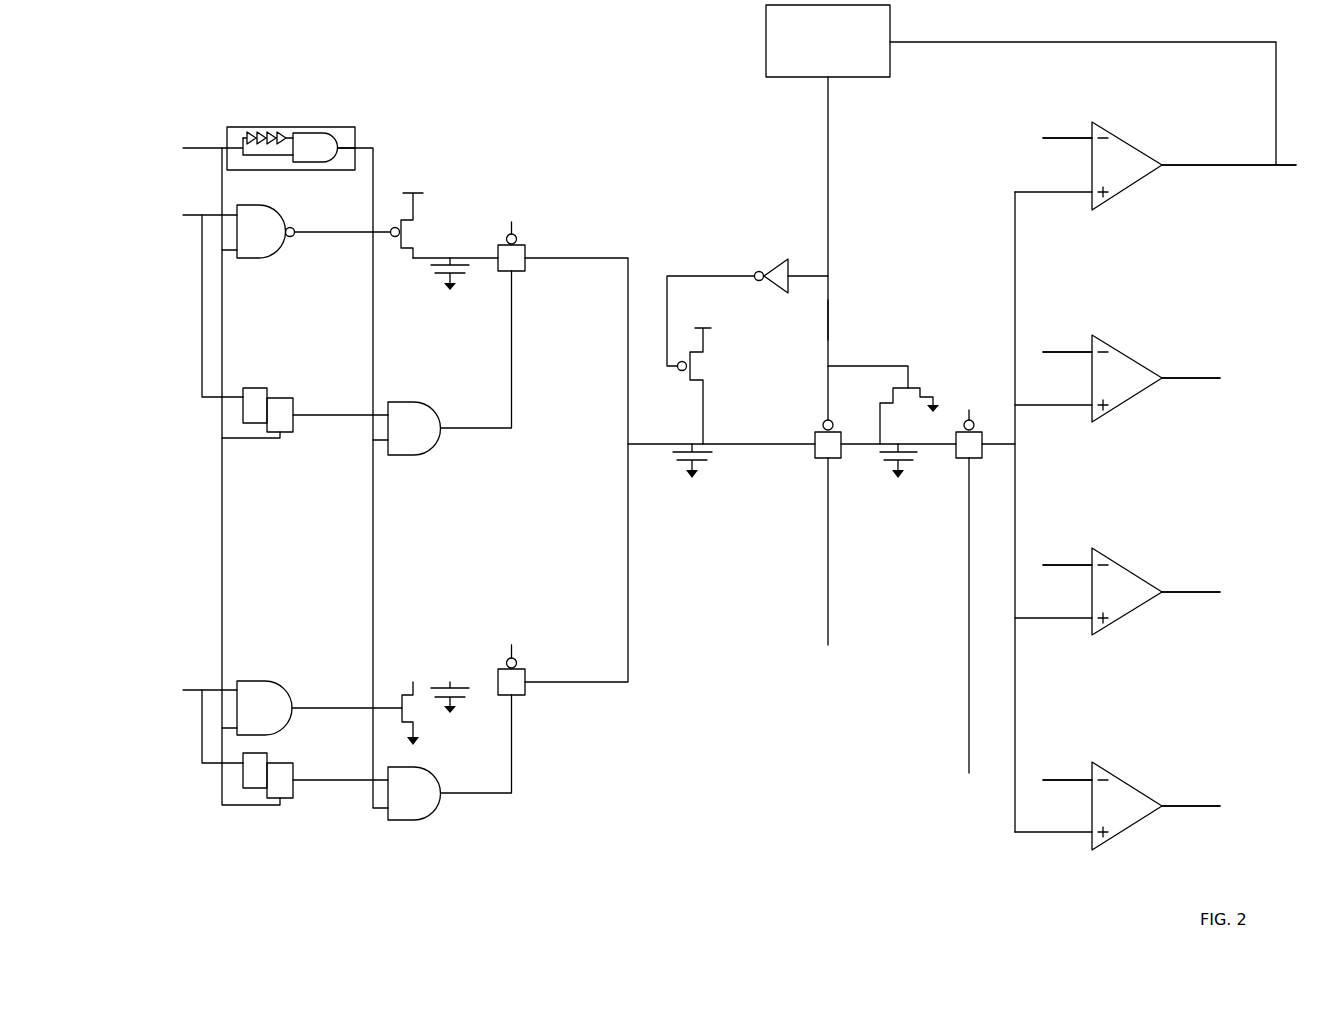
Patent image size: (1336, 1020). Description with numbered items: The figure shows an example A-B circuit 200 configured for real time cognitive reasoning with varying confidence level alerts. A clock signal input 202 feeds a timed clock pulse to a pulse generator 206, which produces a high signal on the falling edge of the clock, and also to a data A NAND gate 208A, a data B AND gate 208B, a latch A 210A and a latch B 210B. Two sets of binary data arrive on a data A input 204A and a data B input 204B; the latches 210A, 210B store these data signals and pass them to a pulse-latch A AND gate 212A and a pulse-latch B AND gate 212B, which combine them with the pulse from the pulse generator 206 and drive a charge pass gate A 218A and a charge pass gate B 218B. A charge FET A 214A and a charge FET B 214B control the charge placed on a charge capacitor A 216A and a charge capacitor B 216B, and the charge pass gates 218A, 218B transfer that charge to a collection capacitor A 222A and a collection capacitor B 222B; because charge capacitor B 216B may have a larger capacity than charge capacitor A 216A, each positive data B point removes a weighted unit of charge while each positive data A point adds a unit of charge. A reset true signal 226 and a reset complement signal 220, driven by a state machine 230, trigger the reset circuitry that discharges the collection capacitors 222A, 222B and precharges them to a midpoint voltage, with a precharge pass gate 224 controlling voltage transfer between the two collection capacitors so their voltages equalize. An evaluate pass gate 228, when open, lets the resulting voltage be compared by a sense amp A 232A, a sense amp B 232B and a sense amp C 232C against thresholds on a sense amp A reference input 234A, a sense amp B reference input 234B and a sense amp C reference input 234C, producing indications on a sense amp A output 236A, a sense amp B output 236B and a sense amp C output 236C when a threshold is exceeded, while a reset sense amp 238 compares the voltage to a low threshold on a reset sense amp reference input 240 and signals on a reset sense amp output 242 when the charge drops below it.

The A-B circuit 200 is at (402, 42).
The clock signal input 202 is at (200, 147).
The data A input 204A is at (200, 213).
The data B input 204B is at (200, 690).
The pulse generator 206 is at (330, 113).
The data A NAND gate 208A is at (248, 272).
The data B AND gate 208B is at (243, 672).
The latch A 210A is at (262, 448).
The latch B 210B is at (255, 817).
The pulse-latch A AND gate 212A is at (415, 455).
The pulse-latch B AND gate 212B is at (443, 810).
The charge FET A 214A is at (405, 185).
The charge FET B 214B is at (396, 683).
The charge capacitor A 216A is at (450, 245).
The charge capacitor B 216B is at (450, 675).
The charge pass gate A 218A is at (519, 220).
The charge pass gate B 218B is at (530, 708).
The reset complement signal 220 is at (900, 802).
The collection capacitor A 222A is at (677, 478).
The collection capacitor B 222B is at (900, 485).
The precharge pass gate 224 is at (814, 418).
The reset true signal 226 is at (828, 333).
The evaluate pass gate 228 is at (969, 395).
The state machine 230 is at (828, 41).
The sense amp A 232A is at (1130, 192).
The sense amp B 232B is at (1130, 405).
The sense amp C 232C is at (1130, 618).
The sense amp A reference input 234A is at (1073, 137).
The sense amp B reference input 234B is at (1058, 352).
The sense amp C reference input 234C is at (1058, 565).
The sense amp A output 236A is at (1250, 165).
The sense amp B output 236B is at (1172, 378).
The sense amp C output 236C is at (1172, 592).
The reset sense amp 238 is at (1130, 832).
The reset sense amp reference input 240 is at (1047, 780).
The reset sense amp output 242 is at (1172, 806).